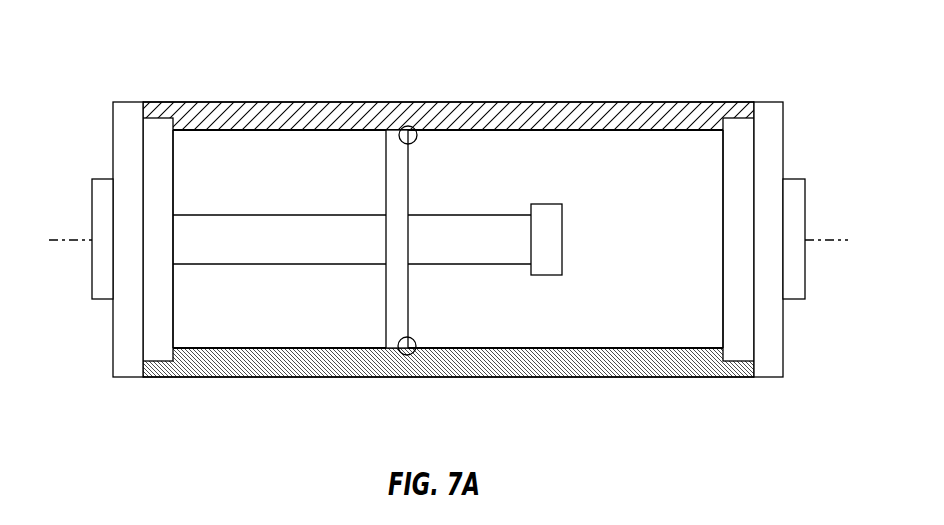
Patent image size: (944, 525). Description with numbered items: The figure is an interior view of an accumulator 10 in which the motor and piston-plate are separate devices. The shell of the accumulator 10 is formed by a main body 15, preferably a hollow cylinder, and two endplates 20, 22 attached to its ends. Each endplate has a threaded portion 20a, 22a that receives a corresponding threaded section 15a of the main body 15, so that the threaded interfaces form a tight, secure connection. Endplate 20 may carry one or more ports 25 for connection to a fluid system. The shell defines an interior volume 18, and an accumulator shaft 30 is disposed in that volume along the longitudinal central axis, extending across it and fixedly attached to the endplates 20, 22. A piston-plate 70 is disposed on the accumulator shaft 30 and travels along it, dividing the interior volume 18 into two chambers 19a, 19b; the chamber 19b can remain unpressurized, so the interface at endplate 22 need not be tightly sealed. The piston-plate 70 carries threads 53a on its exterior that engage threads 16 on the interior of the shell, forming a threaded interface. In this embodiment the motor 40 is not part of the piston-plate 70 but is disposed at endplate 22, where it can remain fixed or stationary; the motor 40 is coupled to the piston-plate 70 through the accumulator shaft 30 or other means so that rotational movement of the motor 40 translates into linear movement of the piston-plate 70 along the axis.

The accumulator 10 is at (92, 77).
The main body 15 is at (488, 102).
The sections of the main body 15a is at (155, 102).
The threads on the interior of the shell 16 is at (238, 134).
The interior volume 18 is at (323, 150).
The chamber 19a is at (303, 328).
The chamber 19b is at (470, 328).
The endplate 20 is at (130, 377).
The threaded portion 20a is at (173, 278).
The endplate 22 is at (768, 377).
The threaded portion 22a is at (731, 275).
The mounting boss 25 is at (805, 205).
The accumulator shaft 30 is at (249, 215).
The motor 40 is at (562, 337).
The threads on the exterior of the piston-plate 53a is at (408, 126).
The piston-plate 70 is at (386, 333).